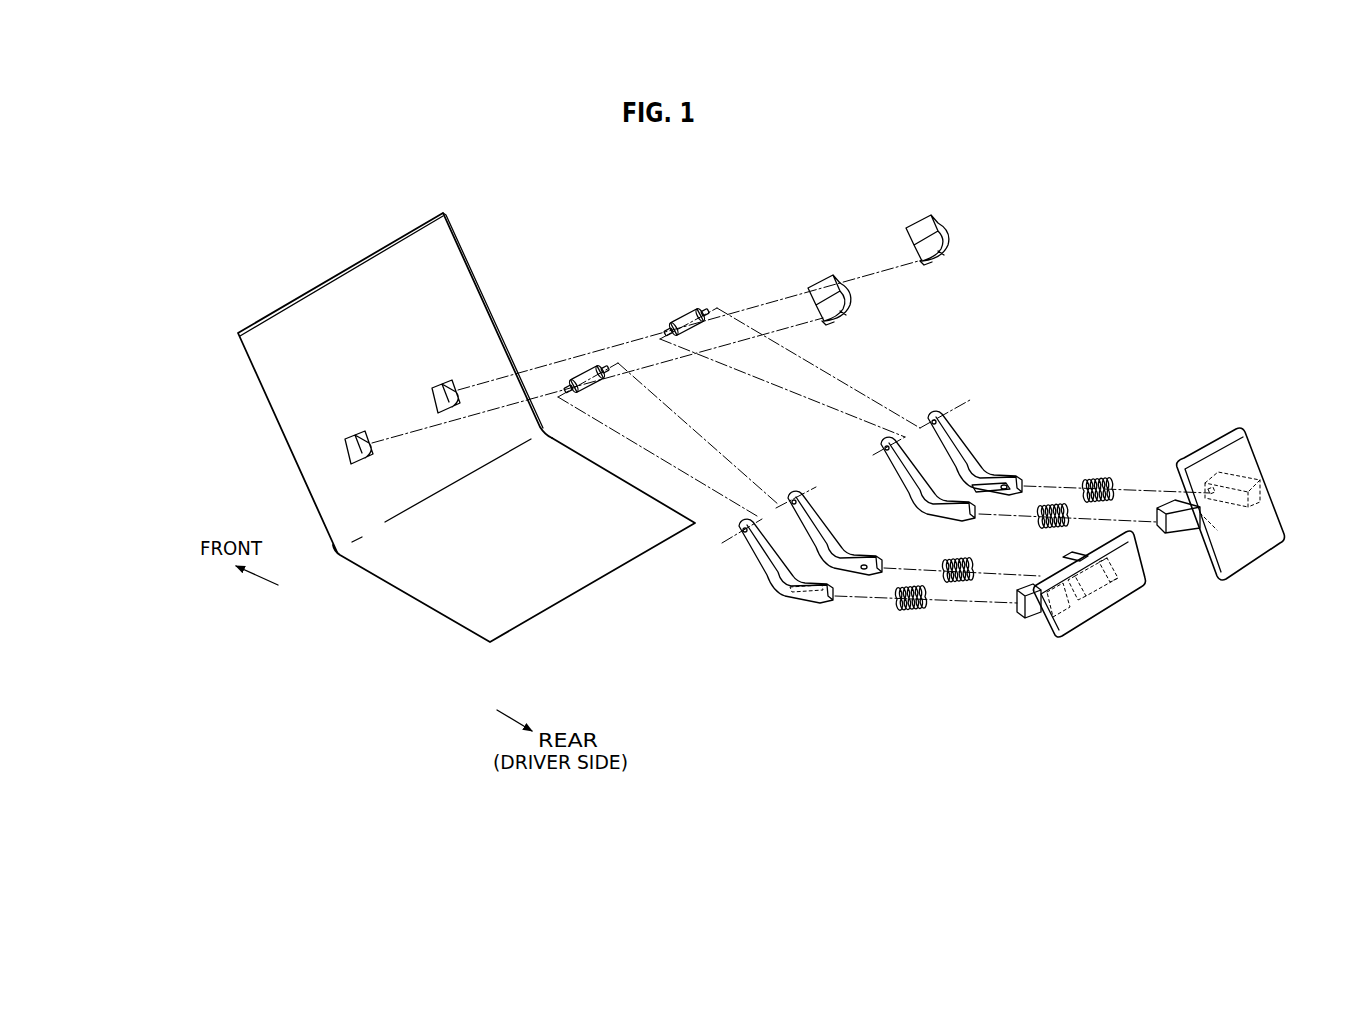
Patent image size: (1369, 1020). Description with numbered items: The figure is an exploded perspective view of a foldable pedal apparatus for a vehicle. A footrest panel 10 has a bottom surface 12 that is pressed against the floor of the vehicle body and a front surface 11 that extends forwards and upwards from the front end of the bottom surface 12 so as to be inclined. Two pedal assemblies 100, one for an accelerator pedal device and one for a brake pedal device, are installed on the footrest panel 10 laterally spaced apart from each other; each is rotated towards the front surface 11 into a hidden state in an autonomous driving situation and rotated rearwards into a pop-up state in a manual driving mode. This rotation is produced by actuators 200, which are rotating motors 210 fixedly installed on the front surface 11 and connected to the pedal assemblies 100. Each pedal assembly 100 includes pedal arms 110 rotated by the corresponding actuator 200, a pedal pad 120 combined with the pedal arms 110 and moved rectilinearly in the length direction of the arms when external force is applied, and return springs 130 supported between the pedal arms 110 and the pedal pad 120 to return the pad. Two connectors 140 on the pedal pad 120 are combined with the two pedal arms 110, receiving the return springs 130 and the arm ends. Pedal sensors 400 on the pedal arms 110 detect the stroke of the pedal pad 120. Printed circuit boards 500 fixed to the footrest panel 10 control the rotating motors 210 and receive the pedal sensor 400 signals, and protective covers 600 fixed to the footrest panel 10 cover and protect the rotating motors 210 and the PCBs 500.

The footrest panel 10 is at (466, 425).
The front surface 11 is at (298, 320).
The bottom surface 12 is at (447, 600).
The pedal assembly 100 is at (1150, 541).
The pedal arm 110 is at (864, 517).
The pedal pad 120 is at (1246, 553).
The return spring 130 is at (947, 578).
The connector 140 is at (1240, 477).
The actuator 200 is at (609, 306).
The rotating motor 210 is at (592, 371).
The pedal sensor 400 is at (807, 595).
The printed circuit board 500 is at (430, 392).
The protective cover 600 is at (852, 297).